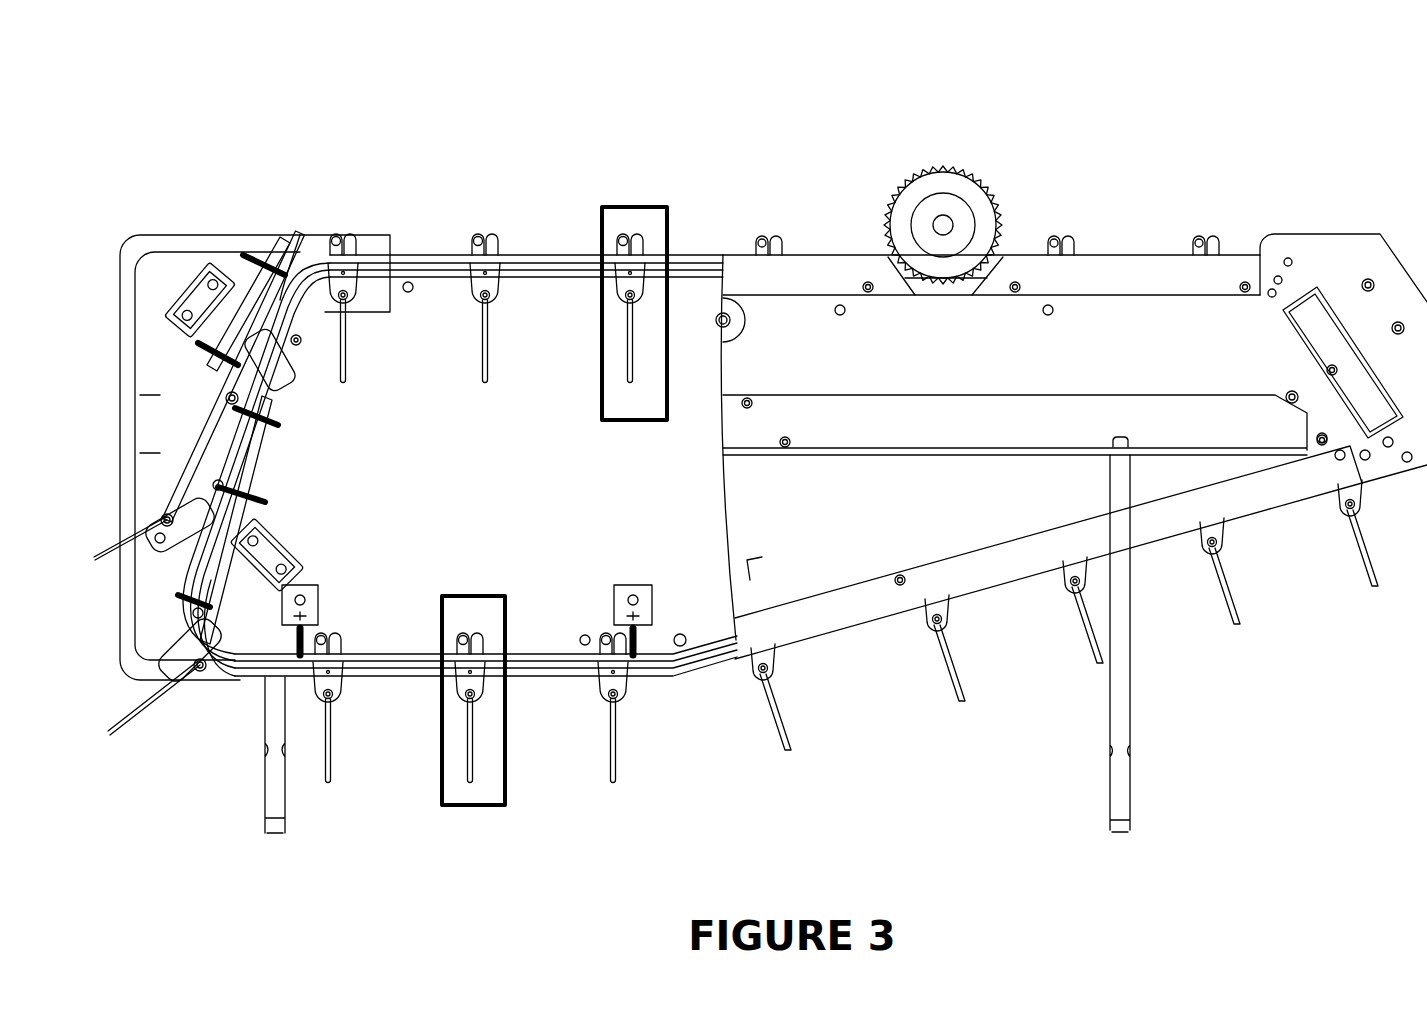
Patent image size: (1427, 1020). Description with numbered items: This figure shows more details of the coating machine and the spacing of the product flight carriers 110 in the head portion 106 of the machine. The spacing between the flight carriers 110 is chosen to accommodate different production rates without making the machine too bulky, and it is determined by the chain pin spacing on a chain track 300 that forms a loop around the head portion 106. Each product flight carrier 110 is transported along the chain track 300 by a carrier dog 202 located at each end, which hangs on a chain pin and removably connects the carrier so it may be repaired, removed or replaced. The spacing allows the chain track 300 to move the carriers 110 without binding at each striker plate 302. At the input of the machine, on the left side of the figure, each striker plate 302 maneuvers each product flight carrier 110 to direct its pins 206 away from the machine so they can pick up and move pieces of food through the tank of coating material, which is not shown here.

The head portion 106 is at (678, 135).
The chain track 300 is at (385, 243).
The striker plate 302 is at (314, 322).
The product flight carrier 110 is at (478, 596).
The carrier dog 202 is at (350, 689).
The pins 206 is at (950, 663).